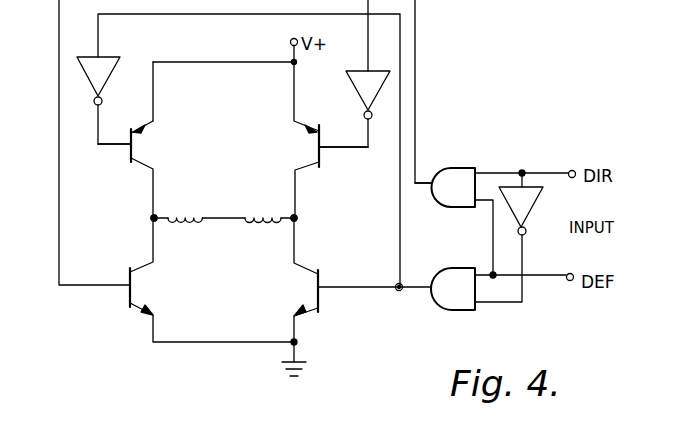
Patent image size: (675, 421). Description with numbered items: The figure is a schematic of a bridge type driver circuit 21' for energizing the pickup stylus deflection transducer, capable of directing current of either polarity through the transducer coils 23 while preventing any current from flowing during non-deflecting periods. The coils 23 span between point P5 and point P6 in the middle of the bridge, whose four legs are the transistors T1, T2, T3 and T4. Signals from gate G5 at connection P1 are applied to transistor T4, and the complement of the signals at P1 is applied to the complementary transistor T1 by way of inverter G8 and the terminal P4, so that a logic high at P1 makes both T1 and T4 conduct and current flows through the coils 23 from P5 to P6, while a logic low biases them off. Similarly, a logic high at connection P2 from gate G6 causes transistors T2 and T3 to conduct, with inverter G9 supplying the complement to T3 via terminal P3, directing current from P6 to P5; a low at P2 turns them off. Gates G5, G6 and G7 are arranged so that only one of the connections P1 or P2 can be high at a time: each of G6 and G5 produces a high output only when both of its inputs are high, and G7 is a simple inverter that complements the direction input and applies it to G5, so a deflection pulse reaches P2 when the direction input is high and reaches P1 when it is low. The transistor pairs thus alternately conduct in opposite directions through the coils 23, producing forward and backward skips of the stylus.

The transducer coils 23 is at (240, 220).
The motor drive circuit 21' is at (355, 375).
The transistor T1 is at (138, 169).
The transistor T2 is at (212, 280).
The transistor T3 is at (321, 171).
The transistor T4 is at (352, 290).
The gate G5 is at (498, 272).
The gate G6 is at (500, 221).
The inverter G7 is at (521, 204).
The inverter G8 is at (368, 109).
The inverter G9 is at (98, 100).
The connection P1 is at (399, 291).
The connection P2 is at (415, 185).
The terminal P3 is at (98, 144).
The terminal P4 is at (368, 147).
The point P5 is at (154, 218).
The point P6 is at (294, 218).